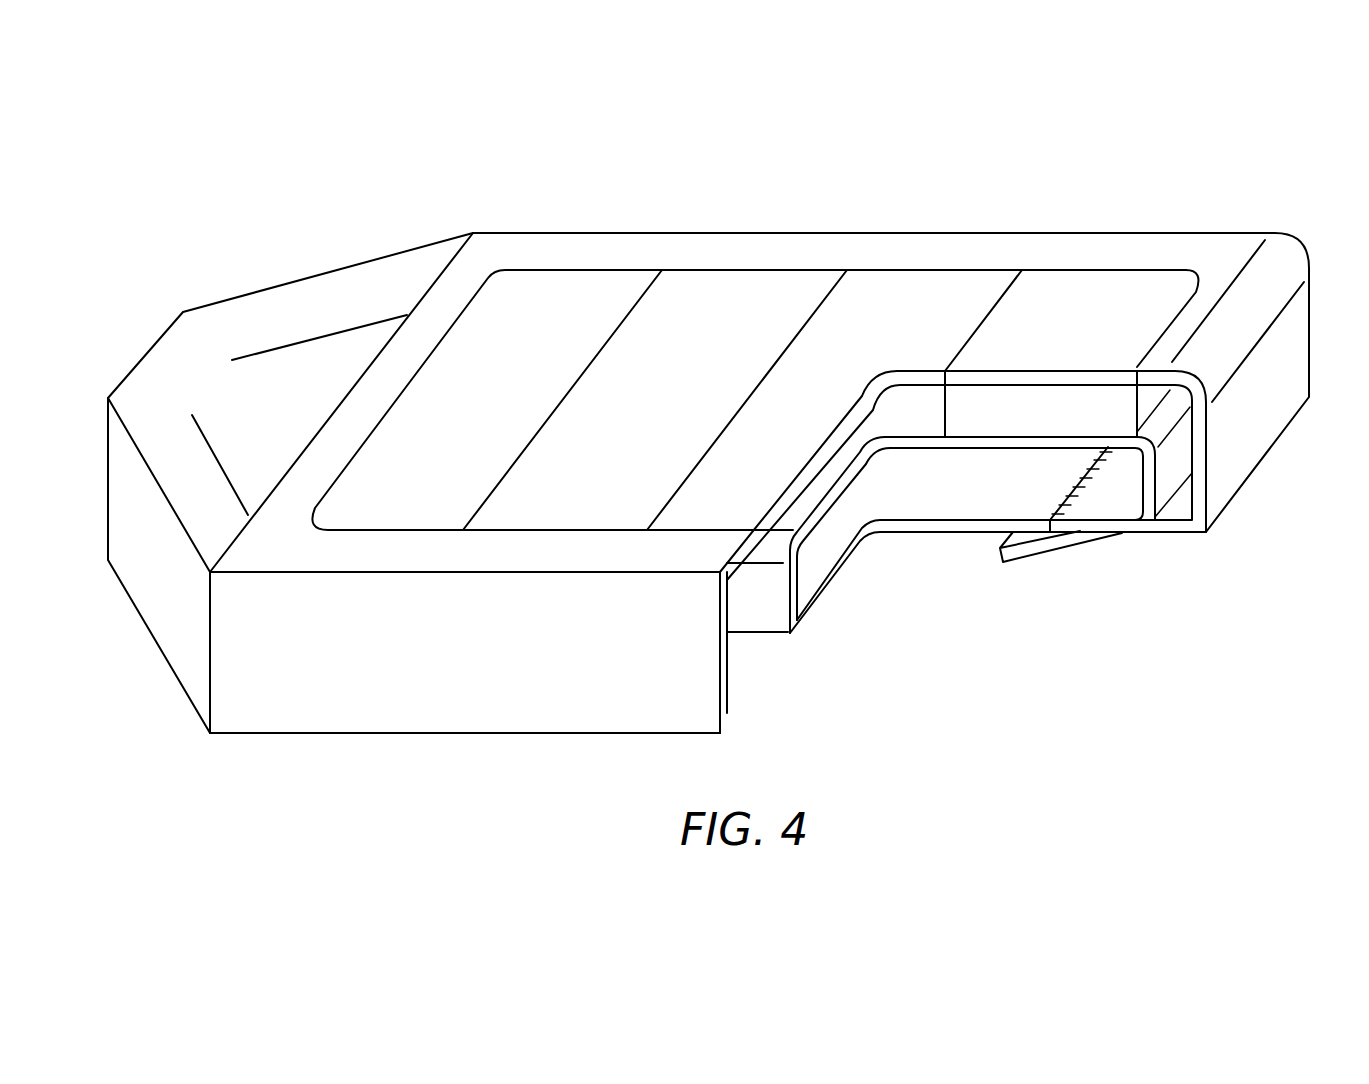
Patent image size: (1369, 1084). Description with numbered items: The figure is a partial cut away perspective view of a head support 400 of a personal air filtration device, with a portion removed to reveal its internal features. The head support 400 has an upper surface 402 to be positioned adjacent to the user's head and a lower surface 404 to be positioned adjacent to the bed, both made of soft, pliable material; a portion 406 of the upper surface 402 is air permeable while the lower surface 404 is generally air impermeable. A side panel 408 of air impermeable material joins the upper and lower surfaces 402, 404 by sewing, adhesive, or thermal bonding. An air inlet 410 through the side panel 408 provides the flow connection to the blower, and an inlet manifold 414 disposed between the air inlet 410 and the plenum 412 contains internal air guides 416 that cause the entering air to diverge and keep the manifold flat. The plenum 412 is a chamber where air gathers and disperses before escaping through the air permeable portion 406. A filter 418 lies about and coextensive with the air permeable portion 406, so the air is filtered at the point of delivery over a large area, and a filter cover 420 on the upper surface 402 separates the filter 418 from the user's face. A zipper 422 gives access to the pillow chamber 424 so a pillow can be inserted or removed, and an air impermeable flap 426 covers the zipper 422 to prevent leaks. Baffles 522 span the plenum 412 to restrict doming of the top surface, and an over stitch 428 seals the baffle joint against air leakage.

The head support 400 is at (1278, 200).
The upper surface 402 is at (462, 265).
The lower surface 404 is at (737, 705).
The air permeable portion 406 is at (575, 275).
The side panel 408 is at (282, 713).
The air inlet 410 is at (157, 342).
The plenum 412 is at (806, 477).
The inlet manifold 414 is at (147, 420).
The internal air guides 416 is at (323, 333).
The filter 418 is at (1085, 375).
The filter cover 420 is at (925, 380).
The zipper 422 is at (1060, 511).
The pillow chamber 424 is at (816, 556).
The air impermeable flap 426 is at (1027, 548).
The over stitch 428 is at (800, 320).
The baffle 522 is at (1008, 417).